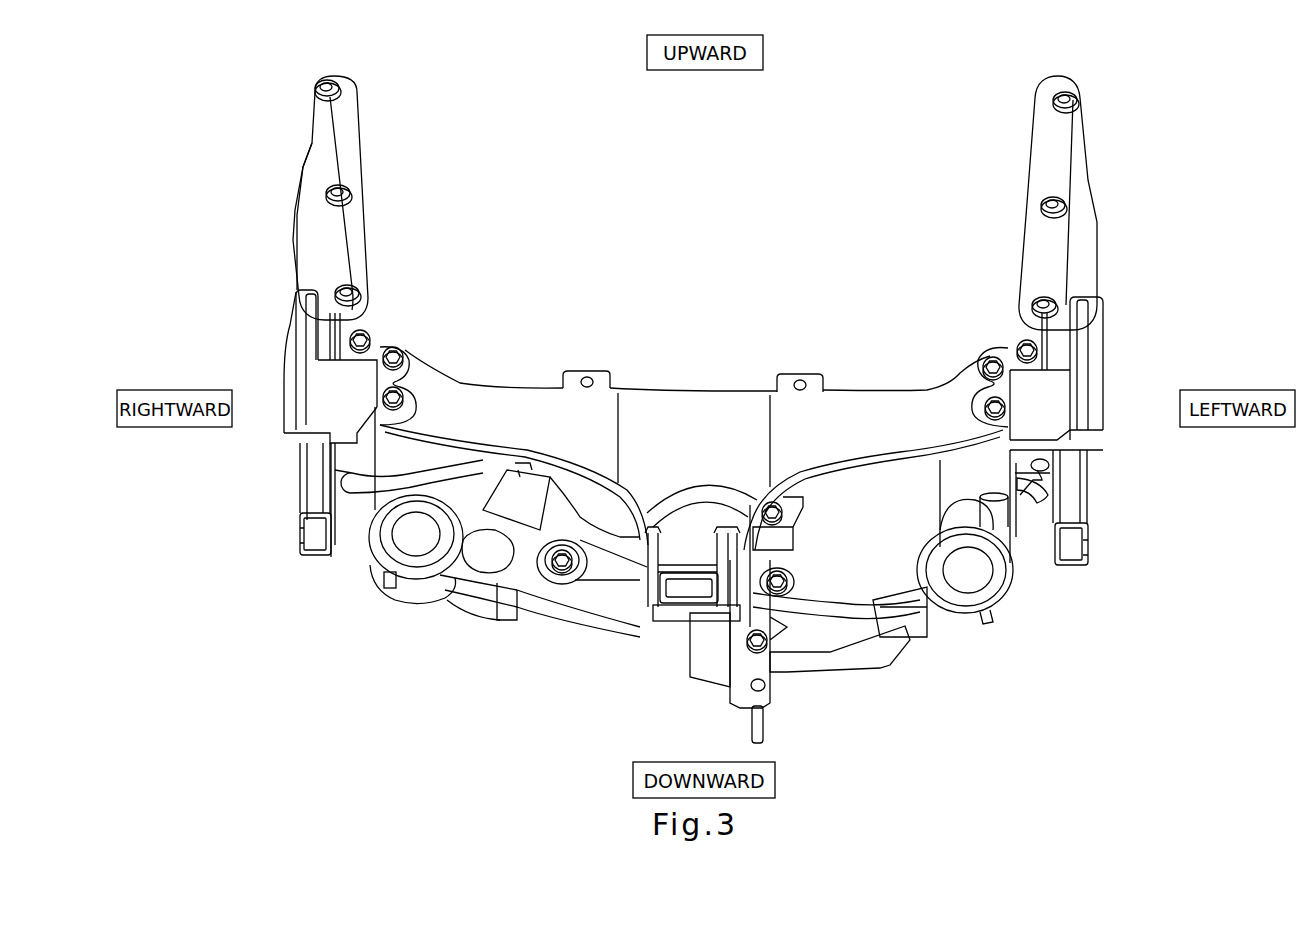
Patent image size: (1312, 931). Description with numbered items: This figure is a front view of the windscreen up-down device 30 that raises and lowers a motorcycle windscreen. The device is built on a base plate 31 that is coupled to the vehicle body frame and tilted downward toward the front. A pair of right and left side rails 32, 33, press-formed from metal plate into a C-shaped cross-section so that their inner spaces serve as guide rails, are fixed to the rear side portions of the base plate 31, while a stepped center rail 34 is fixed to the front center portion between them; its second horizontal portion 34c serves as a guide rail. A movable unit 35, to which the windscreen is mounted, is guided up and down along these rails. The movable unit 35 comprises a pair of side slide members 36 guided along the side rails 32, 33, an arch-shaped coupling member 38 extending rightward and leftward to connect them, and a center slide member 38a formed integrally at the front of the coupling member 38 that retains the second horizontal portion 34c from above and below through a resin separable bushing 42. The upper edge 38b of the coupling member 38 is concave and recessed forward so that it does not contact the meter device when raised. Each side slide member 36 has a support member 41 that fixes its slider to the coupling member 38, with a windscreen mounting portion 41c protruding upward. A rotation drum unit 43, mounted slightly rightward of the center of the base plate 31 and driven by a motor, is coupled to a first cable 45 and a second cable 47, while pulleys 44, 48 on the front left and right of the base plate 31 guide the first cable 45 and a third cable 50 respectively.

The windscreen up-down device 30 is at (452, 146).
The base plate 31 is at (898, 512).
The side rail 32 is at (1077, 503).
The side rail 33 is at (307, 492).
The center rail 34 is at (727, 703).
The second horizontal portion 34c is at (707, 670).
The movable unit 35 is at (730, 388).
The side slide member 36 is at (1103, 338).
The coupling member 38 is at (640, 400).
The center slide member 38a is at (657, 617).
The upper edge 38b is at (860, 390).
The support member 41 is at (1105, 412).
The windscreen mounting portion 41c is at (1067, 142).
The separable bushing 42 is at (667, 580).
The rotation drum unit 43 is at (600, 507).
The pulley 44 is at (990, 597).
The first cable 45 is at (1010, 547).
The second cable 47 is at (372, 493).
The pulley 48 is at (393, 550).
The third cable 50 is at (440, 583).